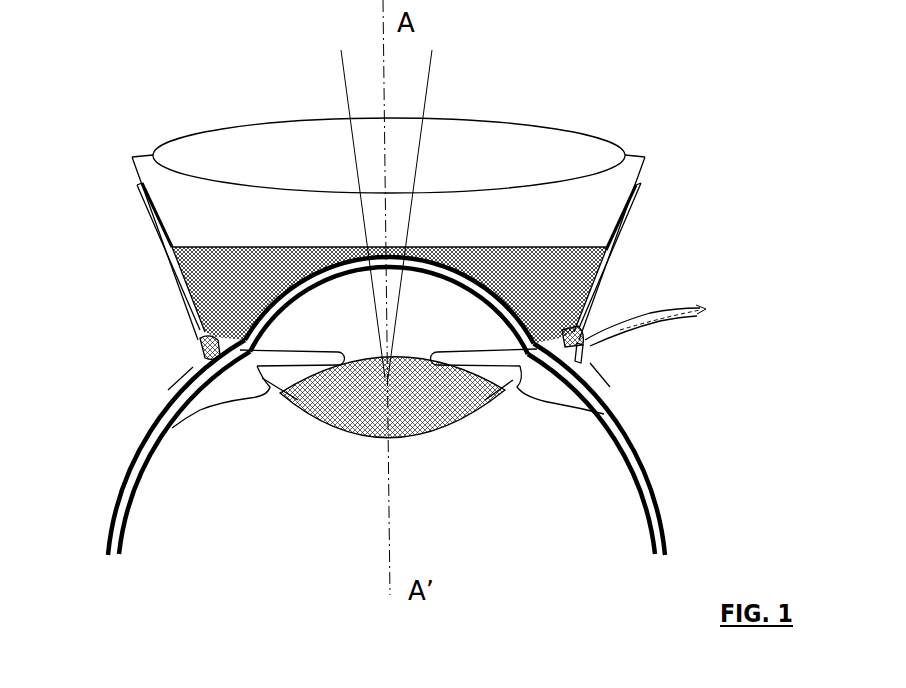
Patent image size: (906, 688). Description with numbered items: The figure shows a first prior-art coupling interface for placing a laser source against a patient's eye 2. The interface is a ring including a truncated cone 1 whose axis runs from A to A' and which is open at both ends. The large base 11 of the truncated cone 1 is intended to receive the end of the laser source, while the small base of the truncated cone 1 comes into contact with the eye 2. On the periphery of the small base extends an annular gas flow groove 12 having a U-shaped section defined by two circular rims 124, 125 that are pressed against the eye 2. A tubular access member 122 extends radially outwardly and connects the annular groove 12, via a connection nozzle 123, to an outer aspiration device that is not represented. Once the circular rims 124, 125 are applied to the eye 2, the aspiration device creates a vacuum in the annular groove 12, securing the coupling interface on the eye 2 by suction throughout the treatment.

The truncated cone 1 is at (640, 180).
The large base 11 is at (643, 157).
The annular gas flow groove 12 is at (198, 340).
The eye 2 is at (133, 458).
The tubular access member 122 is at (587, 347).
The connection nozzle 123 is at (638, 325).
The circular rim 124 is at (216, 333).
The circular rim 125 is at (203, 327).